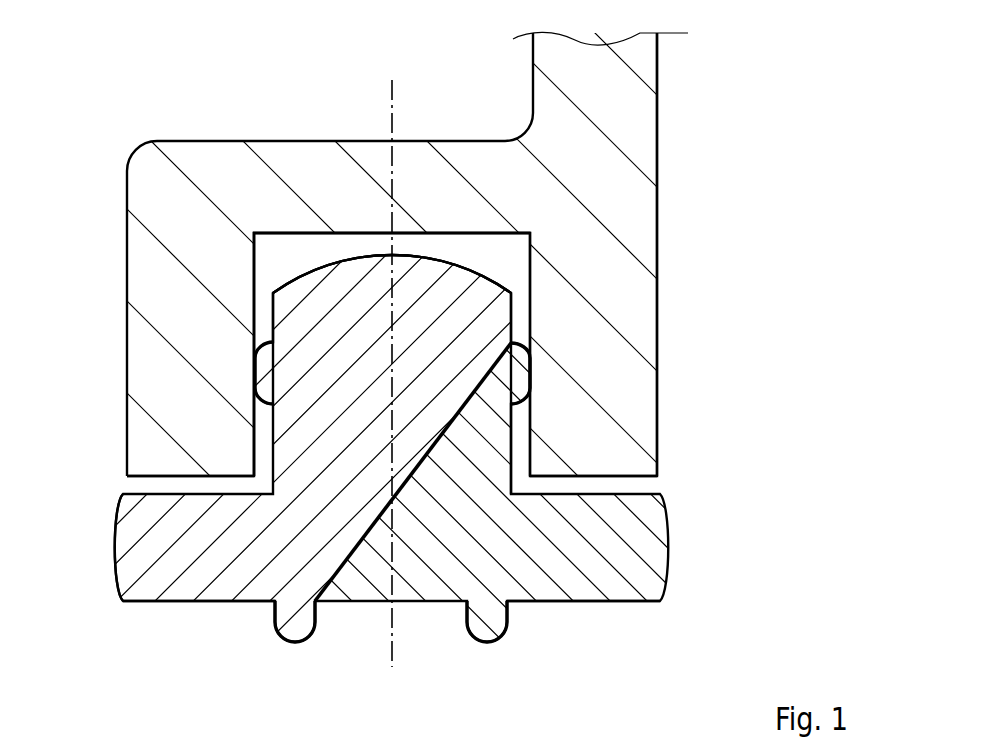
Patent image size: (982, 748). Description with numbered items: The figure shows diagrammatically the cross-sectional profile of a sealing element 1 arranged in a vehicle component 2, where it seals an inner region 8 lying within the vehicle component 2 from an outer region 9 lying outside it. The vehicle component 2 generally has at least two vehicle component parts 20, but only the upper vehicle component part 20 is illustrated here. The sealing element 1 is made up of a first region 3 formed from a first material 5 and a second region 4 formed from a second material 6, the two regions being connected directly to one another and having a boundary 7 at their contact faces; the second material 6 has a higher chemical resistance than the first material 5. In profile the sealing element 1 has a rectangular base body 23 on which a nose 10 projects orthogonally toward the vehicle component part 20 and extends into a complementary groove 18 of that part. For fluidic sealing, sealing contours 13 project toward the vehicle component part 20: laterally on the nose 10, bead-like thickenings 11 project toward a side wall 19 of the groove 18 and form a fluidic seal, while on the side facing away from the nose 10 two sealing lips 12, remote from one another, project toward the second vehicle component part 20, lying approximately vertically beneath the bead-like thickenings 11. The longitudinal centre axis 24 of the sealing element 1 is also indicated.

The sealing element 1 is at (683, 537).
The vehicle component 2 is at (672, 162).
The first region 3 is at (199, 645).
The second region 4 is at (583, 644).
The first material 5 is at (205, 593).
The second material 6 is at (578, 592).
The boundary 7 is at (518, 378).
The inner region 8 is at (740, 487).
The outer region 9 is at (68, 497).
The nose 10 is at (327, 297).
The bead-like thickening 11 is at (263, 378).
The sealing lip 12 is at (295, 633).
The sealing contour 13 is at (396, 539).
The groove 18 is at (507, 263).
The side wall 19 is at (257, 270).
The vehicle component part 20 is at (640, 105).
The base body 23 is at (133, 553).
The centre axis 24 is at (392, 97).